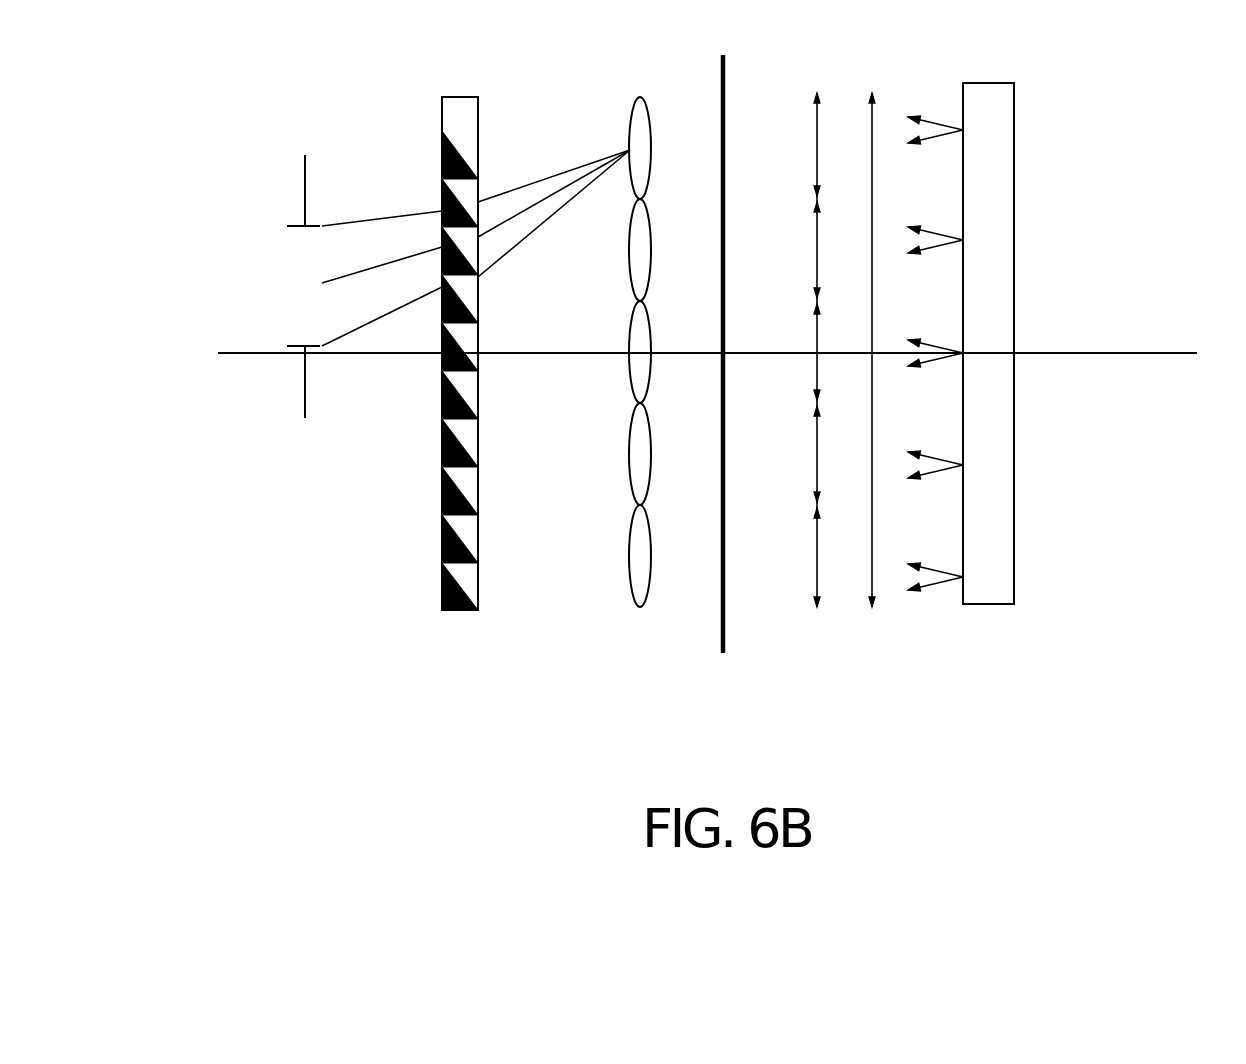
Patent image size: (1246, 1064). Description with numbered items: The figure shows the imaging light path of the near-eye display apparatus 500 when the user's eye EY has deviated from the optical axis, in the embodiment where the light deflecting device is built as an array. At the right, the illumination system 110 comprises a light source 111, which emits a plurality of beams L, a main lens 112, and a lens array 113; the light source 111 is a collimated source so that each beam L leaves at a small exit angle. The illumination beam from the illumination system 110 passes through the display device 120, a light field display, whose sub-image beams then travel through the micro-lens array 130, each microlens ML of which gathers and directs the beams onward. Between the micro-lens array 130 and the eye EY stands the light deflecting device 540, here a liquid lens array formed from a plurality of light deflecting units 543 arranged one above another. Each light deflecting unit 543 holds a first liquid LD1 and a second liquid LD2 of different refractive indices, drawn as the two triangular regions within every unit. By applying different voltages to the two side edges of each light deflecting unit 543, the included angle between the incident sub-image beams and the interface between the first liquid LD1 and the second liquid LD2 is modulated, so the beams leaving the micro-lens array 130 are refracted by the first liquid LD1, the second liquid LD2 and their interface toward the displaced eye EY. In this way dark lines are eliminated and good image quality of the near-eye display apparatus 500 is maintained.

The near-eye display apparatus 500 is at (732, 386).
The light deflecting device 540 is at (458, 346).
The light deflecting unit 543 is at (441, 590).
The micro-lens array 130 is at (643, 93).
The display device 120 is at (726, 70).
The illumination system 110 is at (914, 416).
The light source 111 is at (975, 393).
The main lens 112 is at (874, 610).
The lens array 113 is at (819, 610).
The microlens ML is at (628, 110).
The eye EY is at (307, 185).
The beam L is at (916, 226).
The first liquid LD1 is at (470, 580).
The second liquid LD2 is at (450, 612).